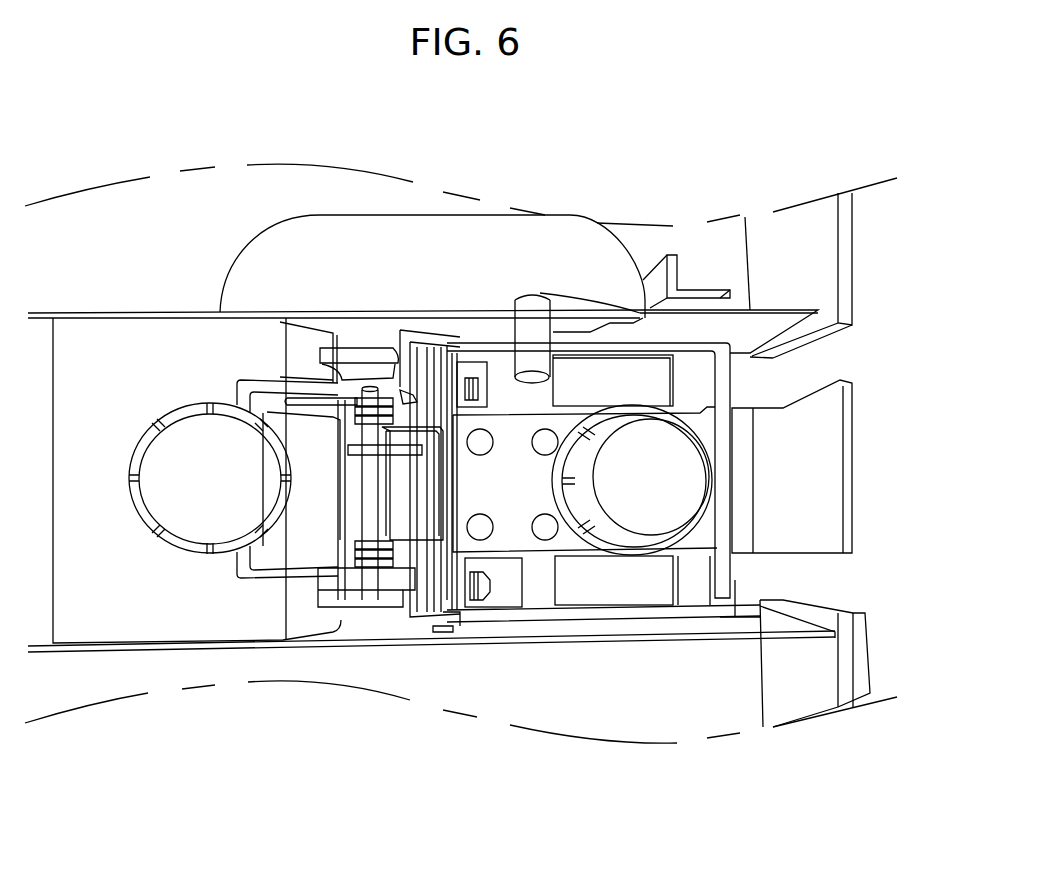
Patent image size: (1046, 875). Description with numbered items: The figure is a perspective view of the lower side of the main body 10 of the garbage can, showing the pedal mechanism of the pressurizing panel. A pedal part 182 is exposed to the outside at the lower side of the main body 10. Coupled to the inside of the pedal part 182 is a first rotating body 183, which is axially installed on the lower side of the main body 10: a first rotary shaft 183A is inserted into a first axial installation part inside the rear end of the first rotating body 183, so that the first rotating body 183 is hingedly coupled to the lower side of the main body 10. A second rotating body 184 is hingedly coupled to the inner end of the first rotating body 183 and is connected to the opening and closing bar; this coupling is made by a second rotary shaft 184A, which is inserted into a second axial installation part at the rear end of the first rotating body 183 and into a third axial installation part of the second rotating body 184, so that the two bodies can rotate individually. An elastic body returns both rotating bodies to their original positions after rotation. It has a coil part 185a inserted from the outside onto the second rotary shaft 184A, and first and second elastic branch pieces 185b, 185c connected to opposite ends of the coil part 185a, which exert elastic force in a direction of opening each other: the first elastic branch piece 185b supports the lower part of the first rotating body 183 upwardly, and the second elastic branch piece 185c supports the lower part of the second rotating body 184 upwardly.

The main body 10 is at (687, 698).
The pedal part 182 is at (847, 577).
The first rotating body 183 is at (533, 583).
The first rotary shaft 183A is at (447, 590).
The second rotating body 184 is at (160, 617).
The second rotary shaft 184A is at (372, 493).
The coil part 185a is at (387, 383).
The first elastic branch piece 185b is at (410, 427).
The second elastic branch piece 185c is at (325, 393).